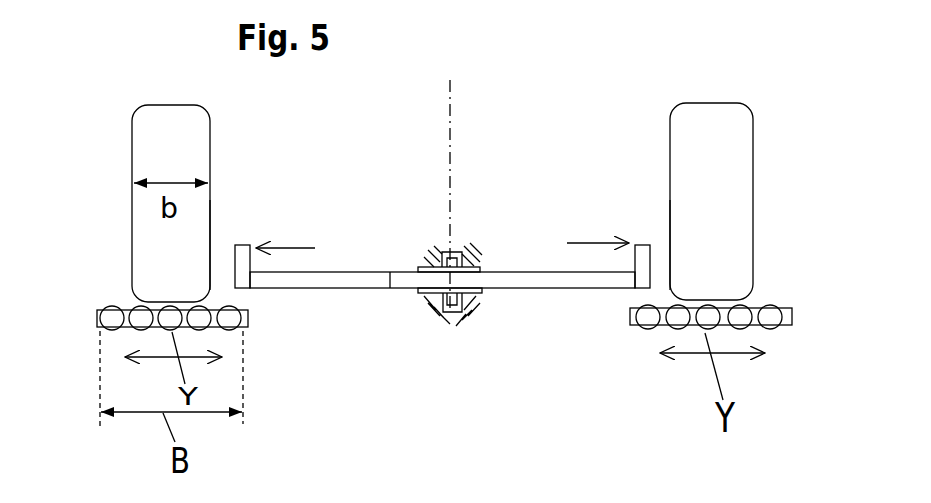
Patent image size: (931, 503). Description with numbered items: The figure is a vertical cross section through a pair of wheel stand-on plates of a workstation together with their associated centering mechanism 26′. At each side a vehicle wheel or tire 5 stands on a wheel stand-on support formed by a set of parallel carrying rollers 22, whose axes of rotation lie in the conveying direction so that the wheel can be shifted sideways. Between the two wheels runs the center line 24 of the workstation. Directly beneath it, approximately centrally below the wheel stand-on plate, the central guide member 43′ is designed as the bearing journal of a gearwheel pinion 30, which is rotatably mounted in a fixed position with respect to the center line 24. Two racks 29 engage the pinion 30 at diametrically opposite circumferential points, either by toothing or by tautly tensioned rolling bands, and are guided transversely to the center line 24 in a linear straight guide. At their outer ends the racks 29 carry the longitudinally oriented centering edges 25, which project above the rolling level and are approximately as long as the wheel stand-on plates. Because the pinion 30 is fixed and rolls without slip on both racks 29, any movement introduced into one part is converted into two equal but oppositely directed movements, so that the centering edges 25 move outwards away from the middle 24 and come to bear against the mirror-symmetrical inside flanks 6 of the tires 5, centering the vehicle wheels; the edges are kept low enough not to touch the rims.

The vehicle tires 5 is at (192, 137).
The tire flanks 6 is at (218, 275).
The carrying rollers 22 is at (172, 332).
The center line 24 is at (455, 138).
The centering edges 25 is at (245, 245).
The centering mechanism 26′ is at (284, 312).
The racks 29 is at (352, 271).
The gearwheel pinion 30 is at (480, 267).
The central guide member 43′ is at (445, 322).